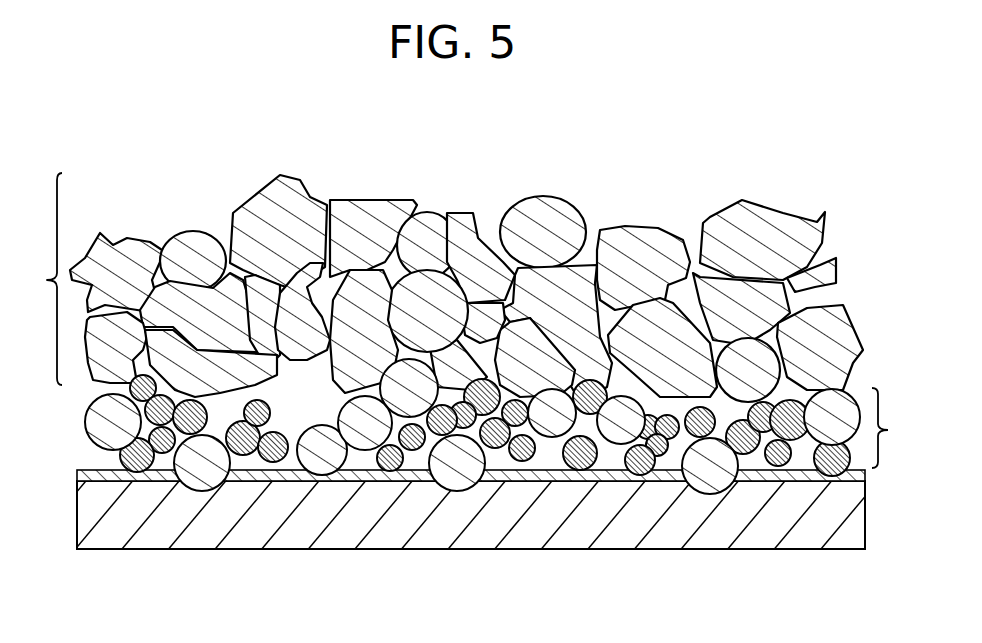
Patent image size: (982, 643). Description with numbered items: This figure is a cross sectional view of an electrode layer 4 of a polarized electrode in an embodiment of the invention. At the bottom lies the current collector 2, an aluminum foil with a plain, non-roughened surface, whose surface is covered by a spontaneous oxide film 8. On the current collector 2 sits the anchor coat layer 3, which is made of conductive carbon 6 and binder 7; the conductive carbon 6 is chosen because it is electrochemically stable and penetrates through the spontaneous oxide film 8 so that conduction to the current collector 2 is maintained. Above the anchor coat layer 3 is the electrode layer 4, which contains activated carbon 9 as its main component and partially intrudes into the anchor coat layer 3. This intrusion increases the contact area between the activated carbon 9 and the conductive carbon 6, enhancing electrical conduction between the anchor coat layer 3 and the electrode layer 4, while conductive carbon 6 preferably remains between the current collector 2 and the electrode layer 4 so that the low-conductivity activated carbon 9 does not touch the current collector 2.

The current collector 2 is at (232, 542).
The anchor coat layer 3 is at (500, 490).
The electrode layer 4 is at (440, 257).
The conductive carbon 6 is at (448, 482).
The binder 7 is at (637, 467).
The spontaneous oxide film 8 is at (108, 476).
The activated carbon 9 is at (370, 205).